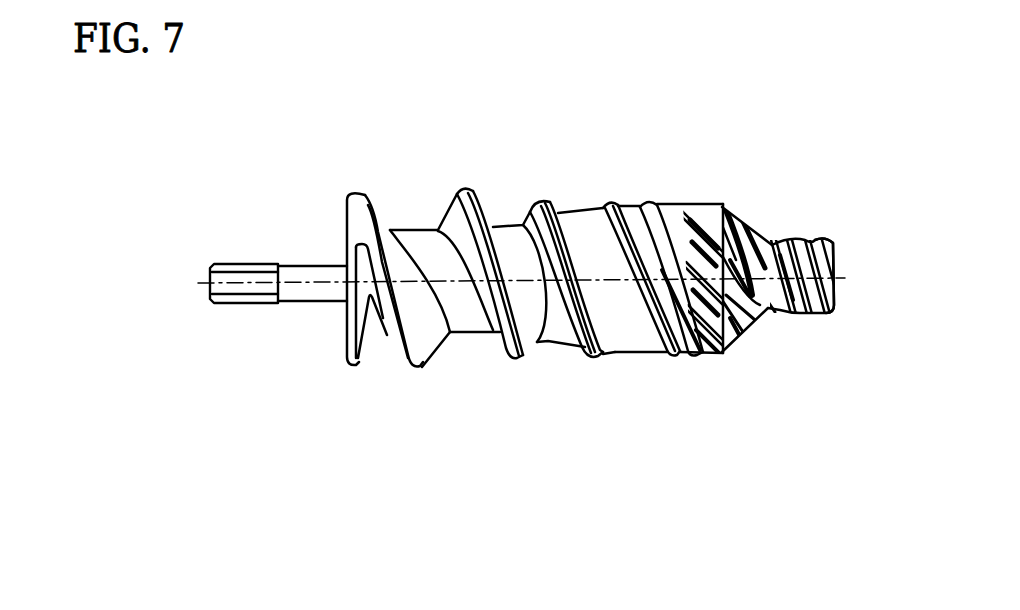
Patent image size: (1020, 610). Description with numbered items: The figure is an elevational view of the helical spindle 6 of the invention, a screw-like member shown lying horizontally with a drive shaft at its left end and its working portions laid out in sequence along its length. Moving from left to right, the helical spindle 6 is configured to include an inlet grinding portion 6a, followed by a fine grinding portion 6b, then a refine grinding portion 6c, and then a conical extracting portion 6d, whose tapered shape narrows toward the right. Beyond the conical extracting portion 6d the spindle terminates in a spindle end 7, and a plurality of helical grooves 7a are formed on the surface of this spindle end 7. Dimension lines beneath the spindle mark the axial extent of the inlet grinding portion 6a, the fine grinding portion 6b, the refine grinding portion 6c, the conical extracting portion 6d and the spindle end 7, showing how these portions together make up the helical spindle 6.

The helical spindle 6 is at (521, 299).
The inlet grinding portion 6a is at (348, 372).
The fine grinding portion 6b is at (613, 362).
The refine grinding portion 6c is at (725, 355).
The conical extracting portion 6d is at (768, 318).
The spindle end 7 is at (801, 321).
The helical grooves 7a is at (812, 238).